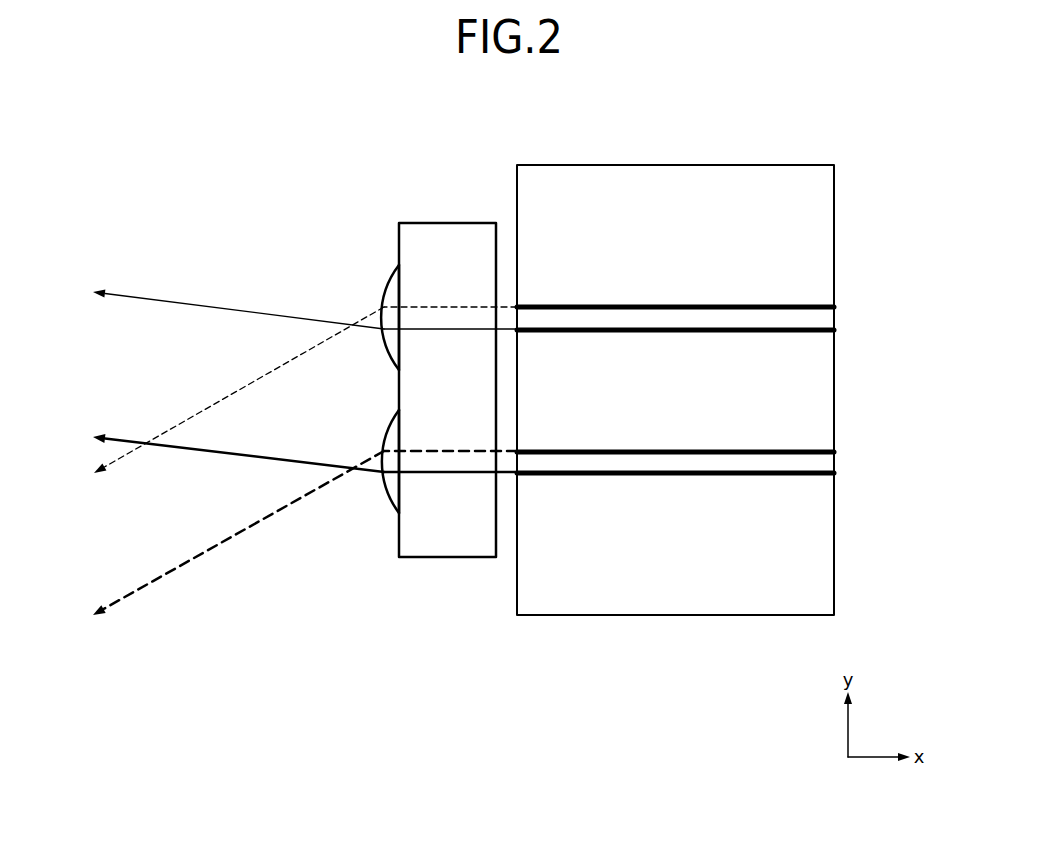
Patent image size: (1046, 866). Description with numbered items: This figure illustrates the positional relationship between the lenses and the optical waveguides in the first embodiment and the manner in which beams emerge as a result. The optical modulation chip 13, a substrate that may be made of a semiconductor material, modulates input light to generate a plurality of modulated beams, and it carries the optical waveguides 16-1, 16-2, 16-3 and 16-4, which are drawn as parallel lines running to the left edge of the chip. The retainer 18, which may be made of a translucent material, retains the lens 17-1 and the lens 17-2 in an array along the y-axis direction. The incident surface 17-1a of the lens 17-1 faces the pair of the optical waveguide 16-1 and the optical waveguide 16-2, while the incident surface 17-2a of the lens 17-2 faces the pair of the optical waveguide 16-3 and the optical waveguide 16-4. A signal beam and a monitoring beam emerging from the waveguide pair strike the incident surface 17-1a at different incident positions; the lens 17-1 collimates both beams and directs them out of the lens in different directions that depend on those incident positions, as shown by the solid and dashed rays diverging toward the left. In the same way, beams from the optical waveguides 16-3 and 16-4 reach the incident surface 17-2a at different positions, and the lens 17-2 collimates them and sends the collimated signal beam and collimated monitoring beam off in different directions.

The optical modulation chip 13 is at (805, 165).
The optical waveguide 16-1 is at (613, 328).
The optical waveguide 16-2 is at (707, 305).
The optical waveguide 16-3 is at (707, 475).
The optical waveguide 16-4 is at (612, 454).
The lens 17-1 is at (381, 284).
The incident surface 17-1a is at (401, 285).
The lens 17-2 is at (380, 495).
The incident surface 17-2a is at (401, 495).
The retainer 18 is at (467, 223).